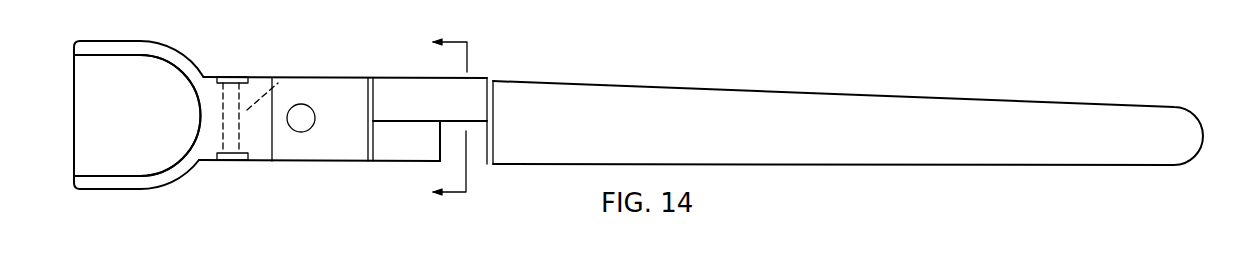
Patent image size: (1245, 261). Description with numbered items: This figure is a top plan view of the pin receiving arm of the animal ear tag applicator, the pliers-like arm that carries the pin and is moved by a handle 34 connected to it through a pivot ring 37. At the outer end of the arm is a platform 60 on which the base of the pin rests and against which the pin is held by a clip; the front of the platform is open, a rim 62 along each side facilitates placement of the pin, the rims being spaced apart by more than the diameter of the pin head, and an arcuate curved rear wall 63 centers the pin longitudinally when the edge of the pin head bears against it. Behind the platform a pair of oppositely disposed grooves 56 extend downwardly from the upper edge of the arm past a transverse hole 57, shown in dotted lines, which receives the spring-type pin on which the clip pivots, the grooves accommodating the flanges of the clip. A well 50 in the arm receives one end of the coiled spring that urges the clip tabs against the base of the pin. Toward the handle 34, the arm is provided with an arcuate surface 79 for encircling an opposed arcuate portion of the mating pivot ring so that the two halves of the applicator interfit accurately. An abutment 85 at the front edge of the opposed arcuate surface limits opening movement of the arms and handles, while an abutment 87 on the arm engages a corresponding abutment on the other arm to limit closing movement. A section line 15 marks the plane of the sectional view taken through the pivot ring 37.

The section line 15 is at (449, 115).
The handle 34 is at (738, 90).
The pivot ring 37 is at (428, 79).
The well 50 is at (301, 104).
The grooves 56 is at (235, 78).
The transverse hole 57 is at (280, 79).
The platform 60 is at (87, 108).
The rim 62 is at (127, 55).
The arcuate curved rear wall 63 is at (200, 118).
The arcuate surface 79 is at (398, 150).
The abutment 85 is at (495, 100).
The abutment 87 is at (366, 98).